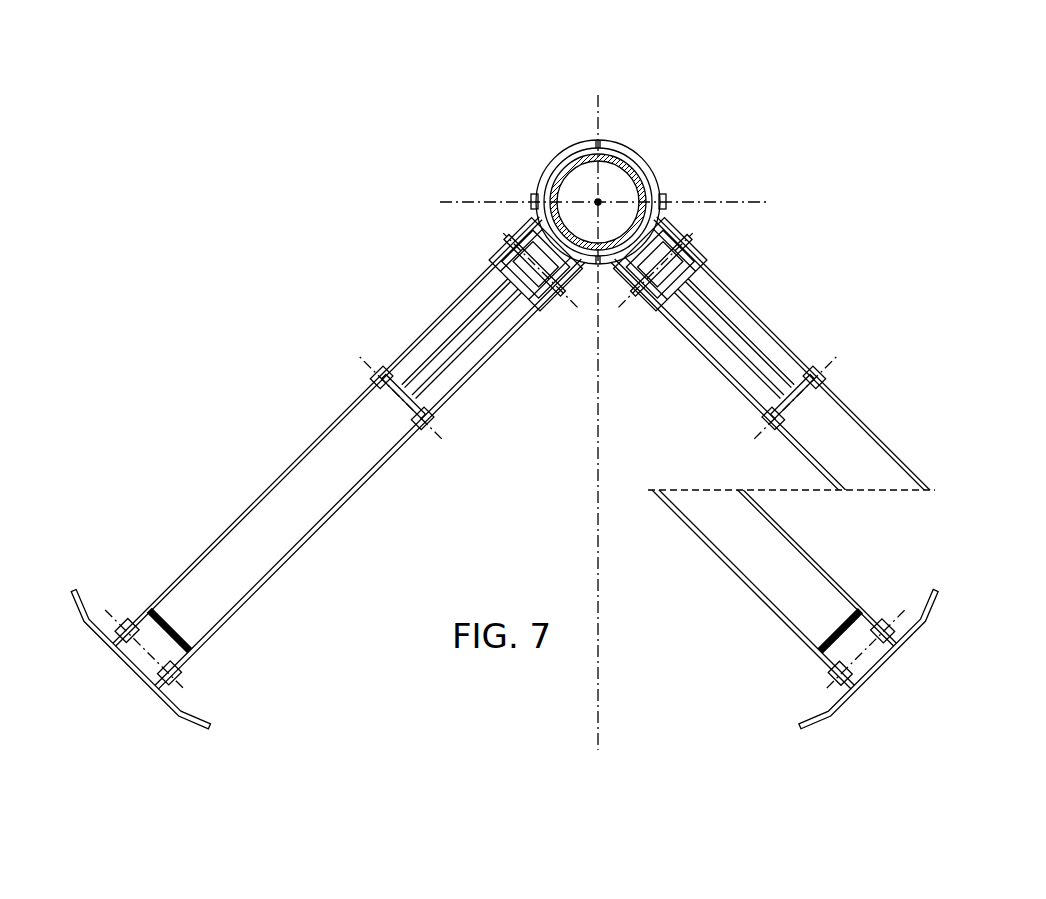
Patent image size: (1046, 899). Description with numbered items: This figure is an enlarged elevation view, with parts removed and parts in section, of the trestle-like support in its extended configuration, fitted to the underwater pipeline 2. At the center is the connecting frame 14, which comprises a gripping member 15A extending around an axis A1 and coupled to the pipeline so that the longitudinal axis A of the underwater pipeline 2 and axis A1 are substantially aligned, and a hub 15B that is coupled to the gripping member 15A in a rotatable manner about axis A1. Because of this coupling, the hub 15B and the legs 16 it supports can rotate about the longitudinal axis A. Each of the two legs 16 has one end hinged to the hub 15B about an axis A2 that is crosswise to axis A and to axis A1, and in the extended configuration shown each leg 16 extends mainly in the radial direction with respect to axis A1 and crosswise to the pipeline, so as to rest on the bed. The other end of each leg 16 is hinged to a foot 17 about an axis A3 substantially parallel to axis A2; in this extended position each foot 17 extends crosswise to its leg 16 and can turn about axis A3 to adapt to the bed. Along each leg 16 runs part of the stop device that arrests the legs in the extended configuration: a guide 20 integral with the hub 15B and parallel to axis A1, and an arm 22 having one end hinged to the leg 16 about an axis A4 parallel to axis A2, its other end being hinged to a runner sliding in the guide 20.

The underwater pipeline 2 is at (557, 160).
The connecting frame 14 is at (699, 96).
The gripping member 15A is at (613, 145).
The hub 15B is at (664, 181).
The leg 16 is at (250, 486).
The foot 17 is at (198, 714).
The guide 20 is at (534, 267).
The arm 22 is at (443, 337).
The longitudinal axis A is at (665, 166).
The axis A1 is at (683, 145).
The axis A2 is at (578, 306).
The axis A3 is at (107, 606).
The axis A4 is at (357, 356).